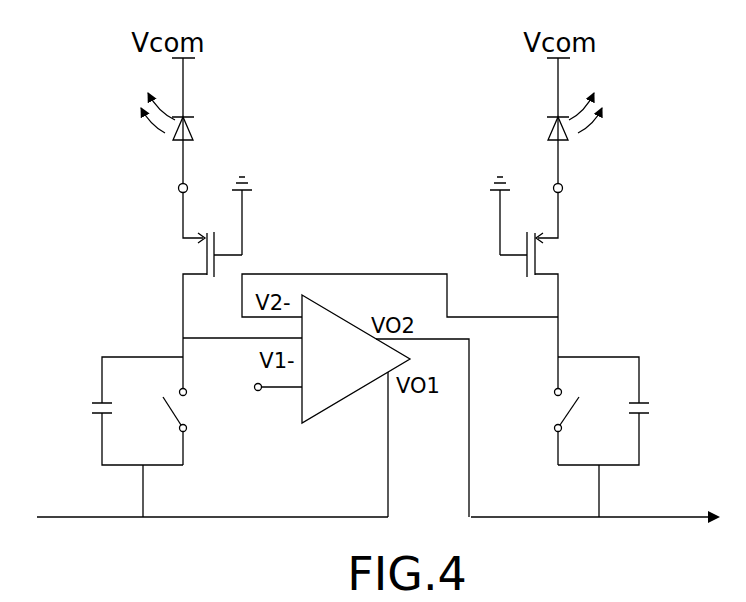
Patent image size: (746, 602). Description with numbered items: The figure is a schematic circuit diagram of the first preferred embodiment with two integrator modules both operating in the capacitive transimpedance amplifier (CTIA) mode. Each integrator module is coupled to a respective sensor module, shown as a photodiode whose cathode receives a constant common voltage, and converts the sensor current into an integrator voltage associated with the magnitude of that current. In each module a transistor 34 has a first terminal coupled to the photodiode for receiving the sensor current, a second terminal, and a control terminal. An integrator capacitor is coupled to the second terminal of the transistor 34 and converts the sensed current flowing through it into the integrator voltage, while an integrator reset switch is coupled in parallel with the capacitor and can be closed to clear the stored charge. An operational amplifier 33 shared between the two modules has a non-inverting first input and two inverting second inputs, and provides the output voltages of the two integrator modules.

The operational amplifier 33 is at (358, 390).
The transistor 34 is at (202, 255).